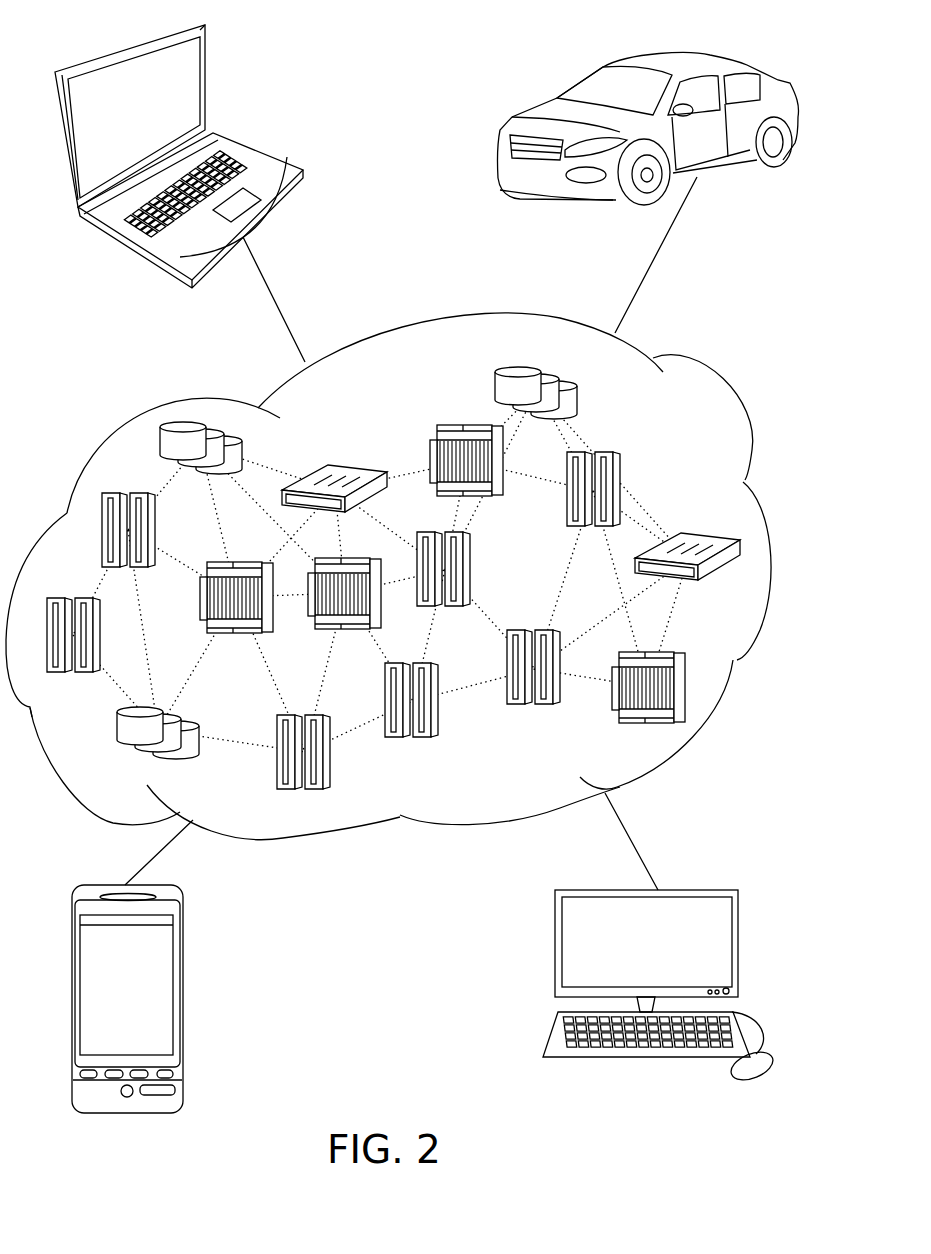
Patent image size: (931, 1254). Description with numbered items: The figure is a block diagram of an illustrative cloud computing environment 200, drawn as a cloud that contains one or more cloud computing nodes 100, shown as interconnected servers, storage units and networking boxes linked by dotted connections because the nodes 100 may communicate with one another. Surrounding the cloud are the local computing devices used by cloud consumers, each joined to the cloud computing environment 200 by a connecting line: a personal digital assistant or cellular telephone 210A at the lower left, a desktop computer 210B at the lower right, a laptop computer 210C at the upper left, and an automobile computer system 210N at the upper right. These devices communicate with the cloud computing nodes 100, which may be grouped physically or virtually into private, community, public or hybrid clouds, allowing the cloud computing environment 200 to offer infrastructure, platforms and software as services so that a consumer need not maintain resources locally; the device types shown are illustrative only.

The cloud computing node 100 is at (710, 518).
The cloud computing environment 200 is at (720, 382).
The personal digital assistant or cellular telephone 210A is at (182, 910).
The desktop computer 210B is at (738, 910).
The laptop computer 210C is at (263, 152).
The automobile computer system 210N is at (753, 68).